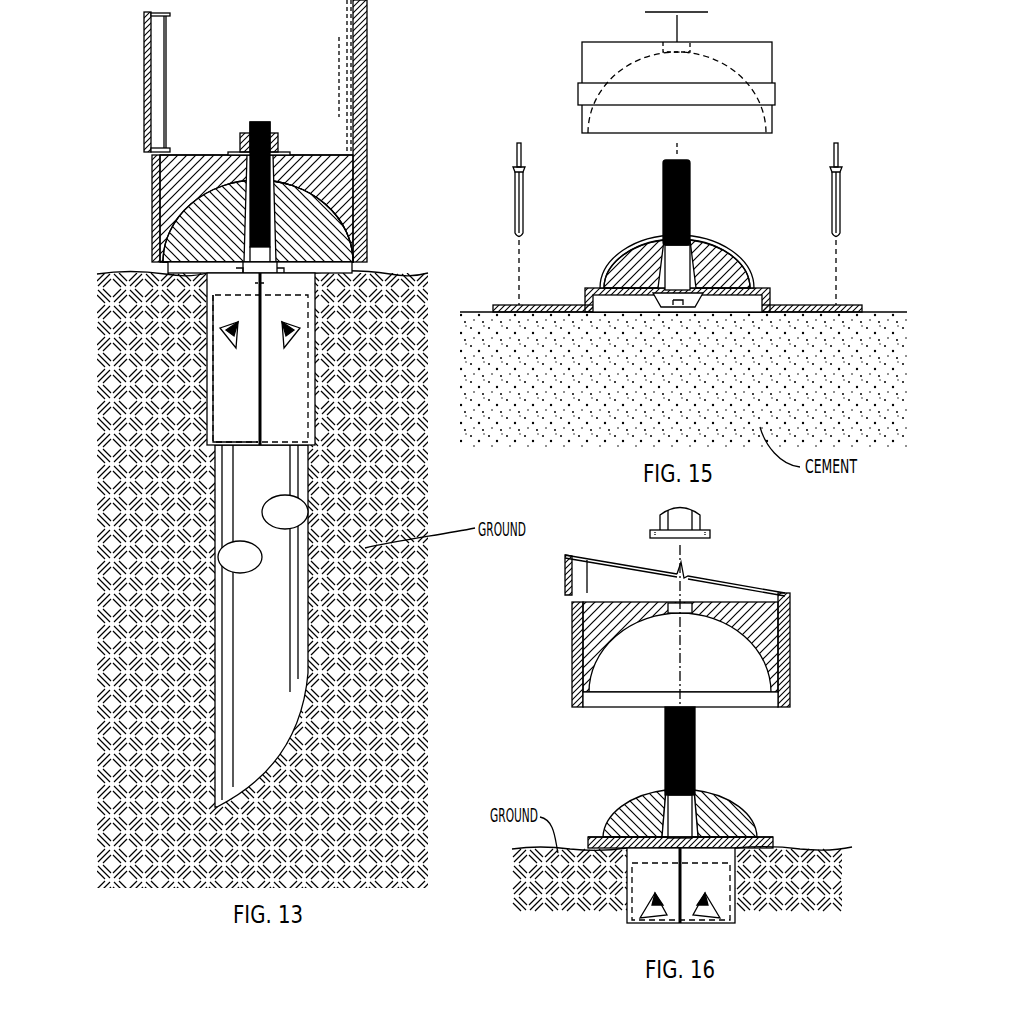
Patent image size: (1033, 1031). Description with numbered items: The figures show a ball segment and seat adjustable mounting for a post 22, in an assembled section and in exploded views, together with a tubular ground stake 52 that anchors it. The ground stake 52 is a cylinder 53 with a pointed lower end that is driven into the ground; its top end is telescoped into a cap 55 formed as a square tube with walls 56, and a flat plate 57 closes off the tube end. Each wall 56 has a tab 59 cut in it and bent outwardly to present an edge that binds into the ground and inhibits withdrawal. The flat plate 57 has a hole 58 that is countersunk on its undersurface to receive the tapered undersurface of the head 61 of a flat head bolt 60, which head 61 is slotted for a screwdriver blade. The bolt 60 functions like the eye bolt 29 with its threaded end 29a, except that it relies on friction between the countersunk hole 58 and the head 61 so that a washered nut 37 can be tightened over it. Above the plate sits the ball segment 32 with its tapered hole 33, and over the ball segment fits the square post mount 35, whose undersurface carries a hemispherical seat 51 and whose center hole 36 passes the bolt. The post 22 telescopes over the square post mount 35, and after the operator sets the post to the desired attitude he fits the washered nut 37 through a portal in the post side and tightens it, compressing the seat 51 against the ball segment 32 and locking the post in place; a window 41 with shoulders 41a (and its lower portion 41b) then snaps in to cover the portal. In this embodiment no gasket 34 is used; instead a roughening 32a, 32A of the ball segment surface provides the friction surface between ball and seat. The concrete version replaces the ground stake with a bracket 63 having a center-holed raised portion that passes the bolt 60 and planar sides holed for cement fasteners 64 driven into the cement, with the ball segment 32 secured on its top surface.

In FIG. 13, the post 22 is at (368, 40).
In FIG. 16, the post 22 is at (790, 600).
In FIG. 13, the eye bolt 29 is at (168, 245).
In FIG. 13, the threaded end 29a is at (155, 193).
In FIG. 13, the ball segment 32 is at (368, 233).
In FIG. 15, the ball segment 32 is at (743, 270).
In FIG. 13, the roughening of the ball segment surface 32A is at (365, 173).
In FIG. 16, the roughening of the ball segment surface 32a is at (737, 805).
In FIG. 13, the tapered hole 33 is at (163, 213).
In FIG. 15, the tapered hole 33 is at (698, 242).
In FIG. 16, the tapered hole 33 is at (658, 797).
In FIG. 15, the gasket 34 is at (630, 260).
In FIG. 15, the square post mount 35 is at (752, 63).
In FIG. 16, the square post mount 35 is at (787, 617).
In FIG. 13, the center hole 36 is at (157, 177).
In FIG. 13, the washered nut 37 is at (280, 138).
In FIG. 16, the washered nut 37 is at (702, 515).
In FIG. 13, the window 41 is at (158, 63).
In FIG. 13, the shoulders 41a is at (143, 82).
In FIG. 13, the bracket foot 41b is at (165, 147).
In FIG. 13, the seat 51 is at (325, 160).
In FIG. 15, the seat 51 is at (728, 72).
In FIG. 16, the seat 51 is at (733, 633).
In FIG. 13, the ground stake 52 is at (264, 384).
In FIG. 16, the ground stake 52 is at (750, 923).
In FIG. 13, the cylinder 53 is at (230, 590).
In FIG. 13, the cap 55 is at (288, 415).
In FIG. 13, the walls 56 is at (232, 407).
In FIG. 16, the flat plate 57 is at (772, 837).
In FIG. 13, the hole 58 is at (280, 268).
In FIG. 16, the hole 58 is at (743, 818).
In FIG. 13, the tab 59 is at (233, 348).
In FIG. 15, the flat head bolt 60 is at (663, 233).
In FIG. 16, the flat head bolt 60 is at (695, 770).
In FIG. 13, the head 61 is at (170, 270).
In FIG. 15, the head 61 is at (733, 245).
In FIG. 16, the head 61 is at (595, 890).
In FIG. 15, the bracket 63 is at (845, 307).
In FIG. 15, the cement fasteners 64 is at (517, 213).